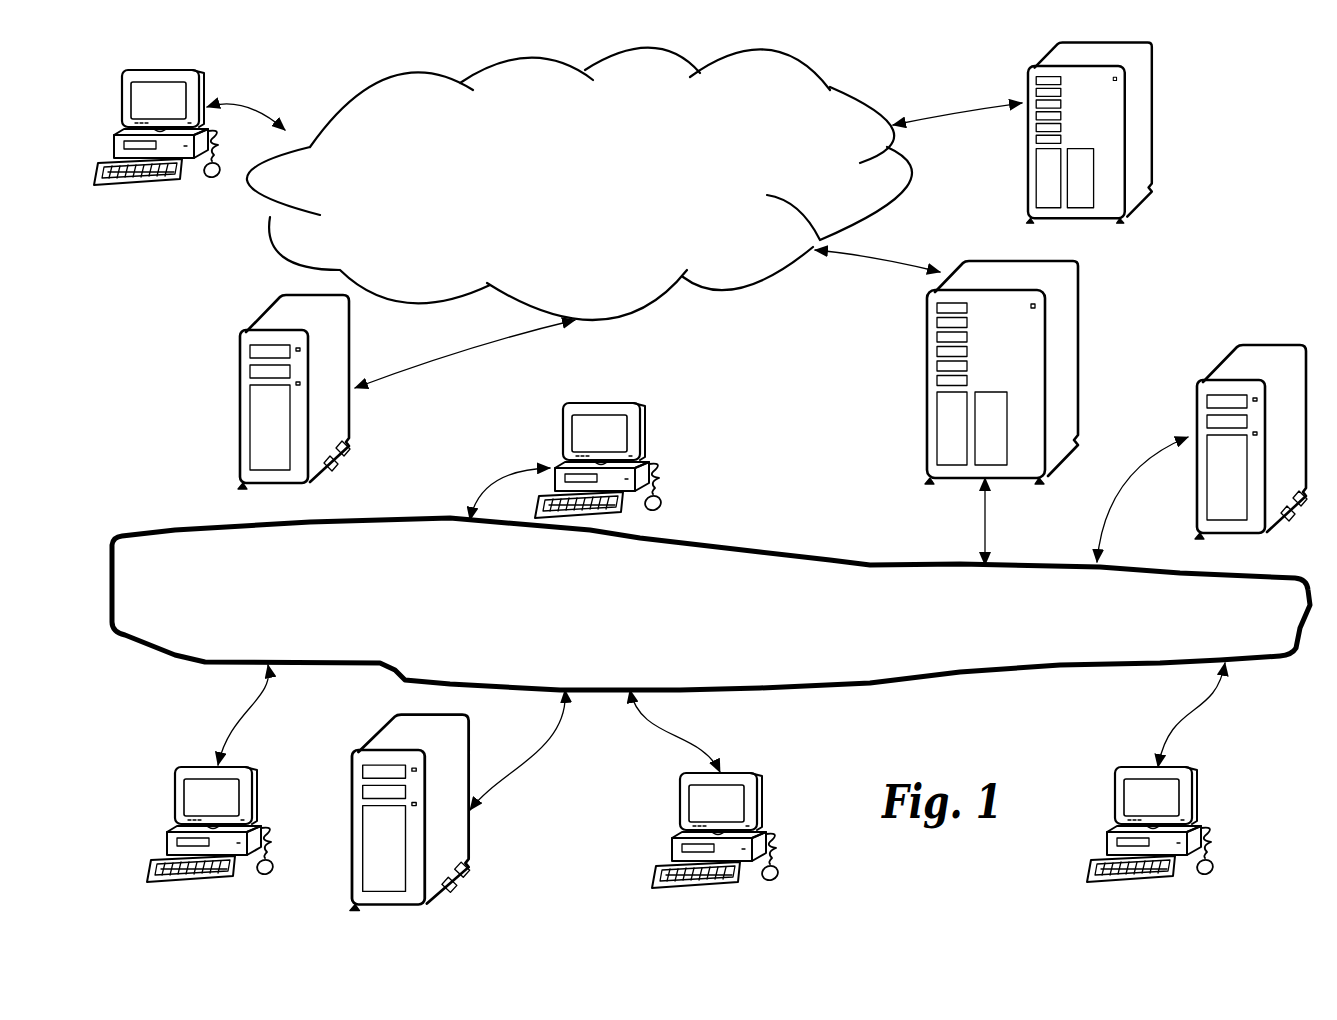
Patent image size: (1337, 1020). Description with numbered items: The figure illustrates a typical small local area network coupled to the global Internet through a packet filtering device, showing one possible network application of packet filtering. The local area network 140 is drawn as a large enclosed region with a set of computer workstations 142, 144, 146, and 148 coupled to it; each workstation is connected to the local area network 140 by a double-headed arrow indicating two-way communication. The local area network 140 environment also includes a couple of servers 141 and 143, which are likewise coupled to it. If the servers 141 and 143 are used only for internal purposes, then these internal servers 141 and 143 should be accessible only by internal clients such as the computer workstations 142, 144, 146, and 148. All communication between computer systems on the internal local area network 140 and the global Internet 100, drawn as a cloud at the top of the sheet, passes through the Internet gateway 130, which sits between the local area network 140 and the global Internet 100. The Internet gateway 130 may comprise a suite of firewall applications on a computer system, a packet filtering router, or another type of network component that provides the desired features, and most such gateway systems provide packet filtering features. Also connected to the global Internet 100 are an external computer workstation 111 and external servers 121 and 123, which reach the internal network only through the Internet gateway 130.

The global Internet 100 is at (579, 184).
The client computer 111 is at (158, 127).
The server 121 is at (294, 392).
The server 123 is at (1088, 133).
The Internet gateway 130 is at (1001, 372).
The local area network 140 is at (116, 606).
The server 141 is at (410, 813).
The computer workstation 142 is at (211, 824).
The server 143 is at (1251, 442).
The computer workstation 144 is at (599, 460).
The computer workstation 146 is at (716, 830).
The computer workstation 148 is at (1151, 824).